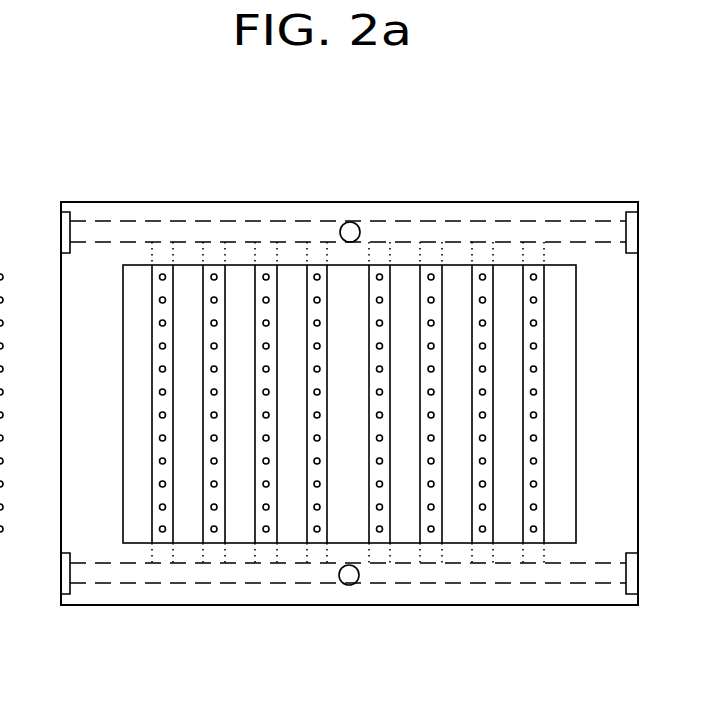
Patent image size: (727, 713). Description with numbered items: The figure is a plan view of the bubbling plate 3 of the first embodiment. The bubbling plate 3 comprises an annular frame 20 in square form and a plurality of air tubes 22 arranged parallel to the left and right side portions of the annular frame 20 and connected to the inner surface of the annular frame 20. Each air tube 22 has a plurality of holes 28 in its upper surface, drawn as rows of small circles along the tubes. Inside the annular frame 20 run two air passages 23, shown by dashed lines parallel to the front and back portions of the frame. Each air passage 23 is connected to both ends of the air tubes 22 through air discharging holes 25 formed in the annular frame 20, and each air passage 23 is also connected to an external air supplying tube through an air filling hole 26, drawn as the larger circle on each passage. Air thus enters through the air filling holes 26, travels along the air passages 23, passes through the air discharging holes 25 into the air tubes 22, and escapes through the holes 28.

The bubbling plate 3 is at (539, 190).
The annular frame 20 is at (113, 212).
The air tube 22 is at (160, 333).
The air passage 23 is at (240, 230).
The air discharging hole 25 is at (427, 248).
The air filling hole 26 is at (340, 242).
The hole 28 is at (162, 371).